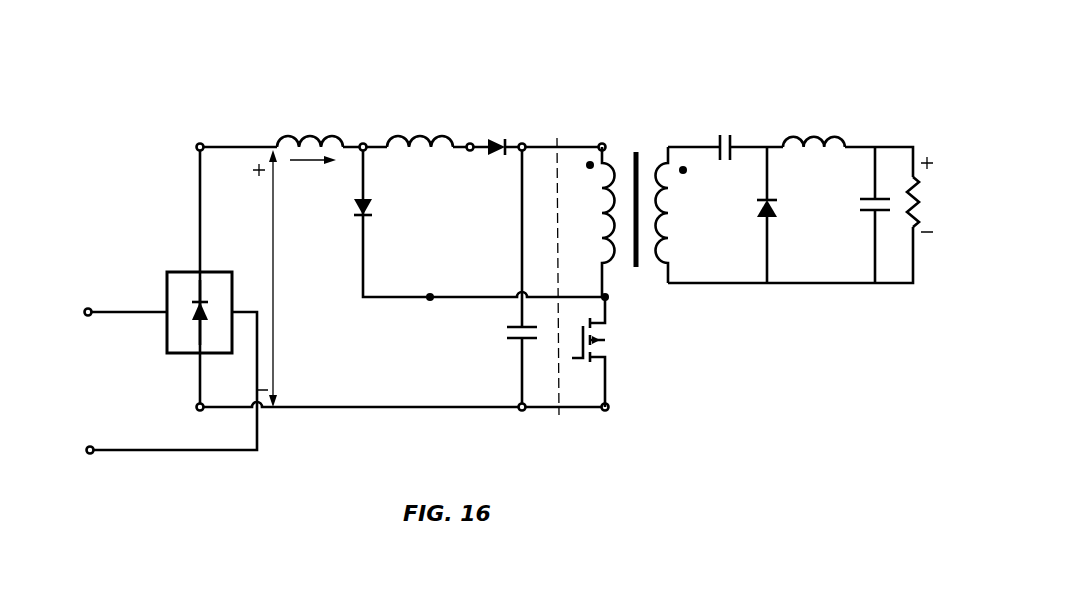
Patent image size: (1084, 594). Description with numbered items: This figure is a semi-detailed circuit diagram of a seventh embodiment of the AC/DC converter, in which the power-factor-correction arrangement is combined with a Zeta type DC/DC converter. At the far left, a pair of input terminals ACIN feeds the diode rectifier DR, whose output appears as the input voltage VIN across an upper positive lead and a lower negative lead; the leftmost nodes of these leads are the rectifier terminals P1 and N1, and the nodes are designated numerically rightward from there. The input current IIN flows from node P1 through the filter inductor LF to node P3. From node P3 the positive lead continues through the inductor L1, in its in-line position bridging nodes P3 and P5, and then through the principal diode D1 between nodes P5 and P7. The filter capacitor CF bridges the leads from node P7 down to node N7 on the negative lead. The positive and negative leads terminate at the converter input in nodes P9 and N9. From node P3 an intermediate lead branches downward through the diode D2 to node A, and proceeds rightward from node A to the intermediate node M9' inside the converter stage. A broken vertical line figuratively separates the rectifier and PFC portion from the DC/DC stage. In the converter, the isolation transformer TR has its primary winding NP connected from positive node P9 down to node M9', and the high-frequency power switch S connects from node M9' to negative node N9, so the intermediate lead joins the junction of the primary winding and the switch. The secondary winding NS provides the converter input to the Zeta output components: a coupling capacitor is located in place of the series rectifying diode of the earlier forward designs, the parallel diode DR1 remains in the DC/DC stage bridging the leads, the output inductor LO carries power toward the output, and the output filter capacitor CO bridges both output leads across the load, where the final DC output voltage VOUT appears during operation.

The rectifier positive terminal node P1 is at (200, 147).
The positive lead node P3 is at (363, 147).
The positive lead node P5 is at (470, 147).
The positive lead node P7 is at (522, 147).
The converter positive input node P9 is at (602, 147).
The rectifier negative terminal node N1 is at (200, 407).
The negative lead node N7 is at (522, 407).
The converter negative input node N9 is at (605, 407).
The intermediate node M9' is at (661, 312).
The intermediate lead node A is at (430, 297).
The filter inductor LF is at (310, 127).
The inductor L1 is at (420, 127).
The principal diode D1 is at (497, 156).
The diode D2 is at (385, 212).
The filter capacitor CF is at (508, 340).
The high-frequency power switch S is at (599, 352).
The isolation transformer TR is at (635, 209).
The primary winding NP is at (590, 222).
The secondary winding NS is at (680, 215).
The diode rectifier DR is at (195, 298).
The parallel rectifying diode DR1 is at (777, 209).
The output inductor LO is at (814, 122).
The output filter capacitor CO is at (855, 215).
The input voltage VIN is at (273, 278).
The final DC output voltage VOUT is at (939, 194).
The input current IIN is at (313, 179).
The AC input terminals ACIN is at (152, 381).